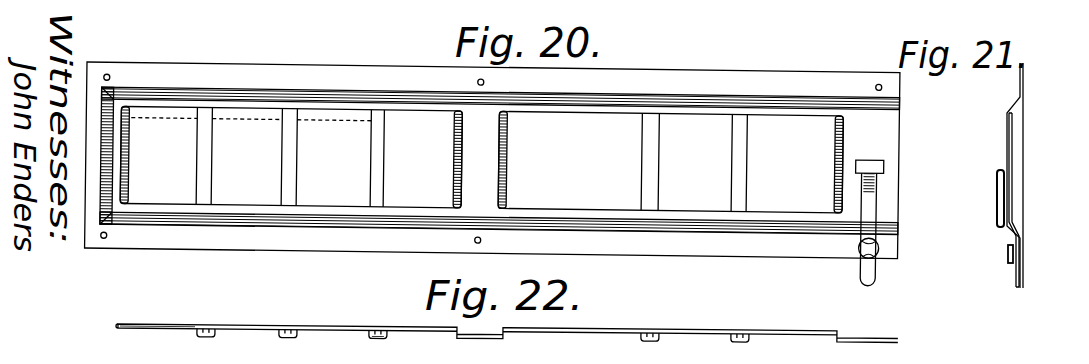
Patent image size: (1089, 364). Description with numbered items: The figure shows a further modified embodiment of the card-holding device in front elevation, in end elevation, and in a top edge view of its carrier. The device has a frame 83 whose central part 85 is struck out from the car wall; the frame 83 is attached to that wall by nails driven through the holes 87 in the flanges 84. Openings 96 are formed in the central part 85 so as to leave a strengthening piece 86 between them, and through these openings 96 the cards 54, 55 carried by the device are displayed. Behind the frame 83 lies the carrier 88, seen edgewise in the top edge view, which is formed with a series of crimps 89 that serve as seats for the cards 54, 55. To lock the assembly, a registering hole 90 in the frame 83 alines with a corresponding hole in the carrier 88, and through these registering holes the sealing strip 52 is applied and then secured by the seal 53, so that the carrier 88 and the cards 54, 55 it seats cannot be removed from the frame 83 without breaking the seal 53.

In FIG. 20, the frame 83 is at (492, 150).
In FIG. 20, the flanges 84 is at (171, 72).
In FIG. 21, the flanges 84 is at (1018, 90).
In FIG. 20, the central part 85 is at (157, 103).
In FIG. 20, the strengthening piece 86 is at (654, 166).
In FIG. 20, the holes 87 is at (477, 82).
In FIG. 21, the carrier 88 is at (1015, 143).
In FIG. 22, the carrier 88 is at (507, 323).
In FIG. 22, the crimps 89 is at (377, 334).
In FIG. 20, the registering hole 90 is at (882, 165).
In FIG. 20, the sealing strip 52 is at (874, 220).
In FIG. 21, the sealing strip 52 is at (1002, 233).
In FIG. 20, the seal 53 is at (879, 259).
In FIG. 21, the seal 53 is at (1008, 253).
In FIG. 20, the number card 54 is at (185, 192).
In FIG. 22, the number card 54 is at (170, 329).
In FIG. 20, the station card 55 is at (630, 203).
In FIG. 20, the openings 96 is at (327, 200).